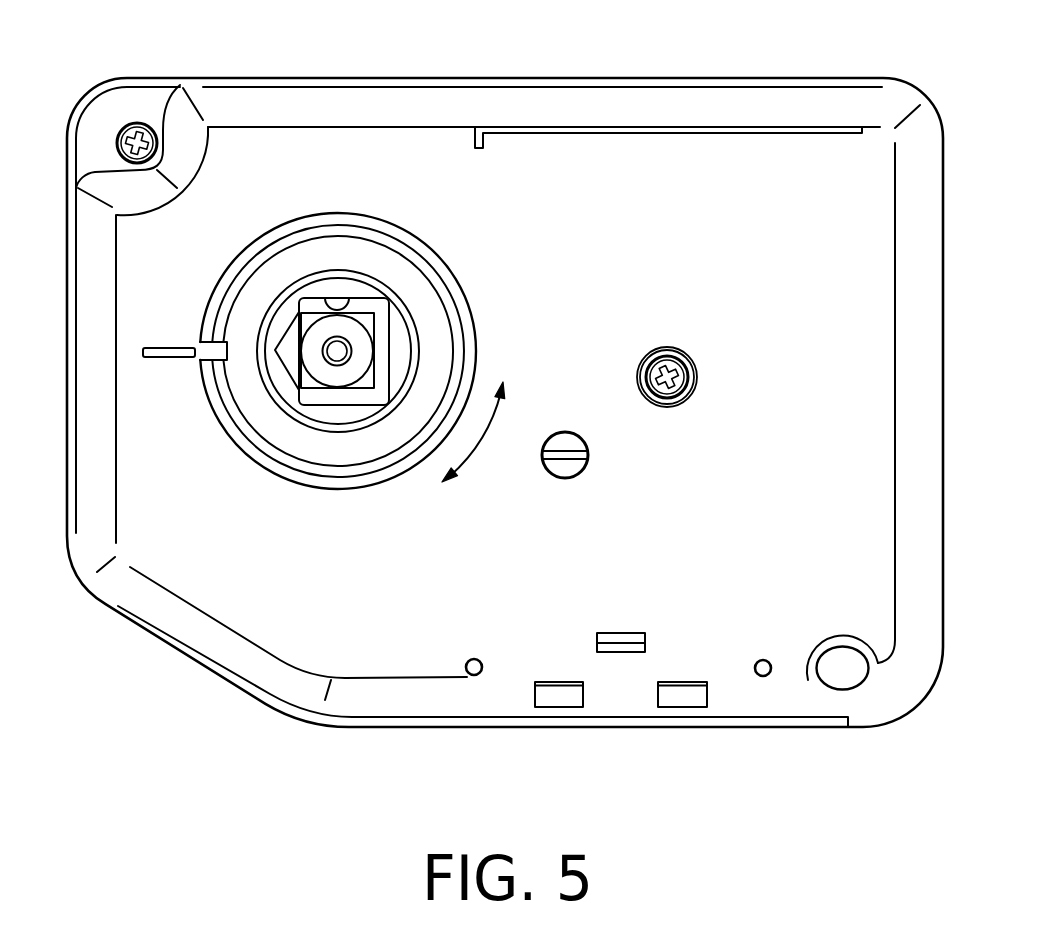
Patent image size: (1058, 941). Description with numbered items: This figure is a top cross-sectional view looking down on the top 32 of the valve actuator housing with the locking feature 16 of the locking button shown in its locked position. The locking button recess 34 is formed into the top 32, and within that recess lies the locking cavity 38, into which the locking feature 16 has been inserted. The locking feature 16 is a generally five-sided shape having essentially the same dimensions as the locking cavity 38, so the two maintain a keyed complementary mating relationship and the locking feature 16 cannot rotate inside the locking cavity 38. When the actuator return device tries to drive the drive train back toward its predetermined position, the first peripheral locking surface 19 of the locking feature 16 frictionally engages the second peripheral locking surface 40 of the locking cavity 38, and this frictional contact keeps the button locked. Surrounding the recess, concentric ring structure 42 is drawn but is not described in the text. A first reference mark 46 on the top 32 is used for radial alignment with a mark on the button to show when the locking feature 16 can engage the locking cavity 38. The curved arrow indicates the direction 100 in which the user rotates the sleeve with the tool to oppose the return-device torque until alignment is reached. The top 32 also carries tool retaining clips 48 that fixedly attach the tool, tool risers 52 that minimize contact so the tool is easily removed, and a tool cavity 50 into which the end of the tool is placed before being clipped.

The locking feature 16 is at (295, 357).
The first peripheral locking surface 19 is at (340, 306).
The top 32 is at (782, 150).
The locking button recess 34 is at (475, 328).
The locking cavity 38 is at (323, 407).
The second peripheral locking surface 40 is at (287, 325).
The inner ring 42 is at (437, 275).
The first reference mark 46 is at (170, 357).
The tool retaining clips 48 is at (613, 652).
The tool cavity 50 is at (868, 678).
The tool risers 52 is at (477, 676).
The direction 100 is at (482, 437).